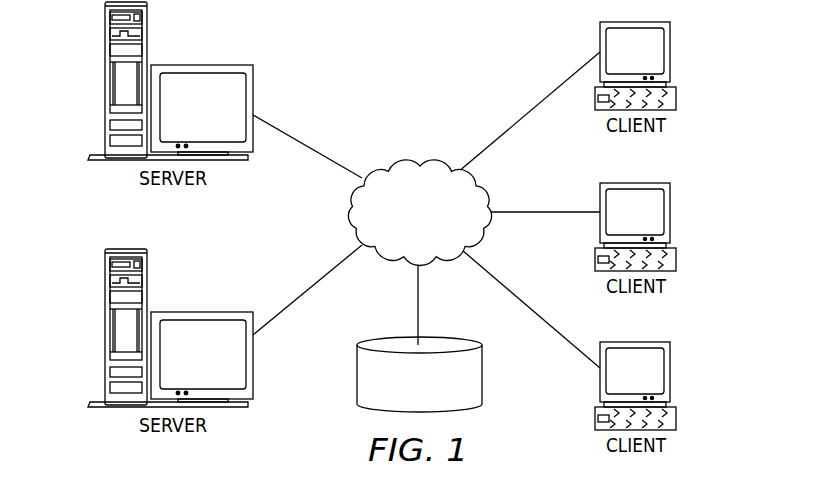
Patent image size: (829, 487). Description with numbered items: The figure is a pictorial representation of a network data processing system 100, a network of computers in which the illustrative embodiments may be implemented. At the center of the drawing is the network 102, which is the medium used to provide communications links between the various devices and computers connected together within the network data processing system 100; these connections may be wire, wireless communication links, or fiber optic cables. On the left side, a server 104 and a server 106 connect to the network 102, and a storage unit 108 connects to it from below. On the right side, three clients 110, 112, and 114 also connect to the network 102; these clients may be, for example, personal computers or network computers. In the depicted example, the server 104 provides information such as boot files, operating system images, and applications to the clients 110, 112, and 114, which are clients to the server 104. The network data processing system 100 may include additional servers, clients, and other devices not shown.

The network data processing system 100 is at (468, 58).
The network 102 is at (390, 164).
The server 104 is at (104, 80).
The server 106 is at (104, 328).
The storage unit 108 is at (357, 390).
The client 110 is at (673, 52).
The client 112 is at (673, 212).
The client 114 is at (673, 372).